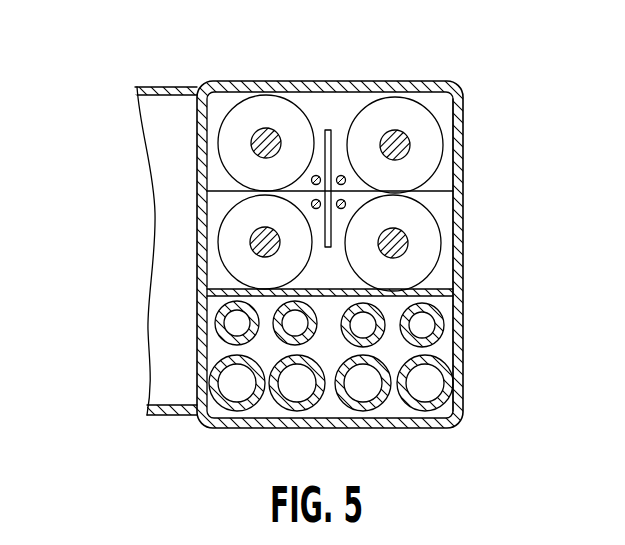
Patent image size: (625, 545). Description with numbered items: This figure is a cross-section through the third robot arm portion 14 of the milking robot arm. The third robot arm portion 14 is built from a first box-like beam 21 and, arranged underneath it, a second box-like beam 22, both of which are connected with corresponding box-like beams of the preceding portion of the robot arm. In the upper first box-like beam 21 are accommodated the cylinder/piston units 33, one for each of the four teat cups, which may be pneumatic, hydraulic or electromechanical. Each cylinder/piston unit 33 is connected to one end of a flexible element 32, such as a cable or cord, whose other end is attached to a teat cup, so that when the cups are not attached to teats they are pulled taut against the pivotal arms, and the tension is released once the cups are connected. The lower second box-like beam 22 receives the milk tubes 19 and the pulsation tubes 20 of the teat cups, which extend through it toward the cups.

The third robot arm portion 14 is at (406, 82).
The milk tubes 19 is at (292, 400).
The pulsation tubes 20 is at (363, 325).
The first box-like beam 21 is at (454, 250).
The second box-like beam 22 is at (445, 349).
The flexible elements 32 is at (341, 175).
The cylinder/piston units 33 is at (227, 232).